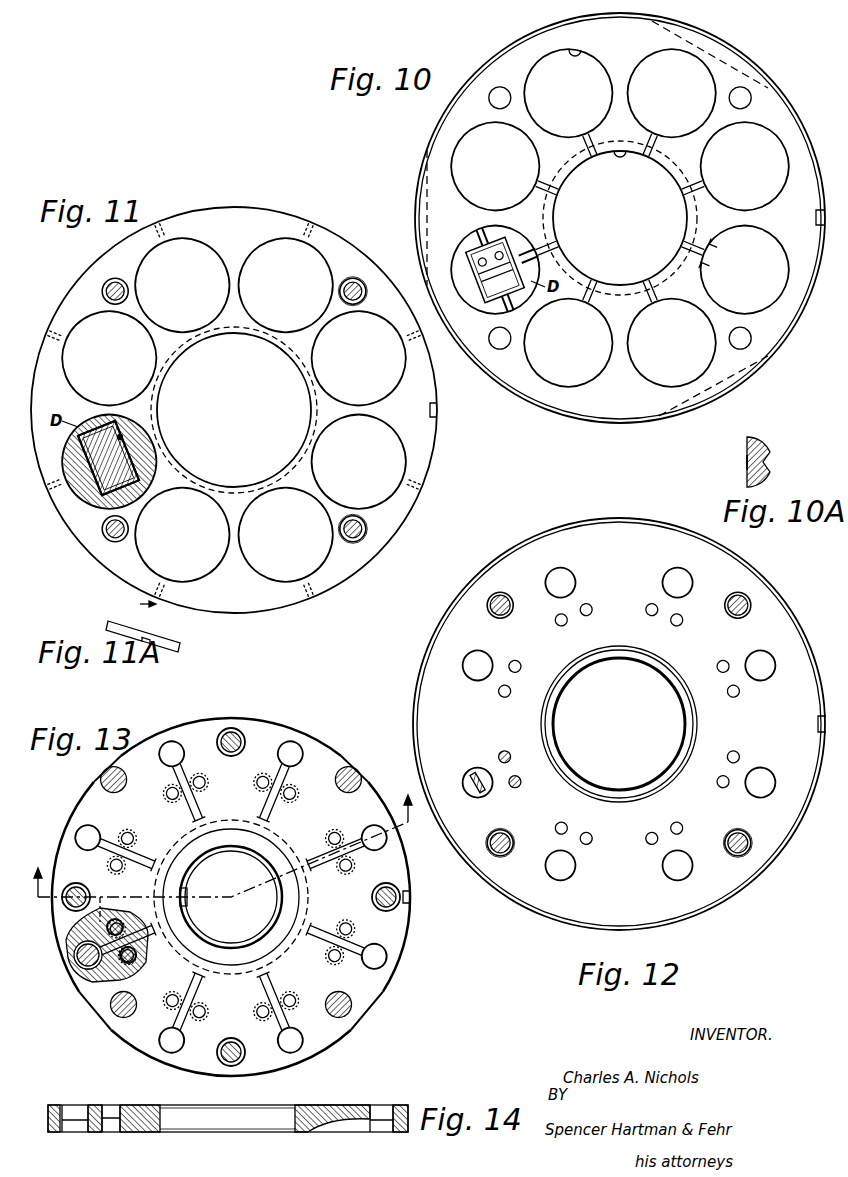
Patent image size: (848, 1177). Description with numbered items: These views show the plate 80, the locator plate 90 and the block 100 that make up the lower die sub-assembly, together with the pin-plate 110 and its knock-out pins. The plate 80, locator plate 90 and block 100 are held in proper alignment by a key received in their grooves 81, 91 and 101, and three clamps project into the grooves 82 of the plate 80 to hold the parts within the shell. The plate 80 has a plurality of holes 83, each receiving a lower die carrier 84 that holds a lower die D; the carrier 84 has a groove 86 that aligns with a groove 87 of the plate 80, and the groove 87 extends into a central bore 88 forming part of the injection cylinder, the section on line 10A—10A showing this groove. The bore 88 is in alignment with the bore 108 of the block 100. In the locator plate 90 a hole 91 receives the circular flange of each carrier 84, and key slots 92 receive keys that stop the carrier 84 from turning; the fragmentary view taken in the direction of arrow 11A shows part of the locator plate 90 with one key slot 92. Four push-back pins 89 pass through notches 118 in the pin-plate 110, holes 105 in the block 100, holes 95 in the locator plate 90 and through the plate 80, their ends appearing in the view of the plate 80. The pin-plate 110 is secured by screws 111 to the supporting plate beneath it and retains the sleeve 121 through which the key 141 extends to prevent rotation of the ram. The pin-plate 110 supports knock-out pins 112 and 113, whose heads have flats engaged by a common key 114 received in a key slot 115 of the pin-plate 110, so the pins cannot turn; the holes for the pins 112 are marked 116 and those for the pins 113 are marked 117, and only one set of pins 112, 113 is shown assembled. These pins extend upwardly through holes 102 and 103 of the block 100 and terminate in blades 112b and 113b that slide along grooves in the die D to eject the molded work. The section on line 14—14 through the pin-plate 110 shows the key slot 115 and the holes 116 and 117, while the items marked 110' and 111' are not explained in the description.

In FIG. 10, the plate 80 is at (560, 416).
In FIG. 10A, the plate 80 is at (768, 455).
In FIG. 10, the groove 81 is at (815, 219).
In FIG. 10, the grooves 82 is at (426, 208).
In FIG. 10, the holes 83 is at (582, 56).
In FIG. 10, the lower die carrier 84 is at (468, 256).
In FIG. 11, the lower die carrier 84 is at (135, 461).
In FIG. 10, the groove 86 is at (527, 251).
In FIG. 10, the groove 87 is at (556, 247).
In FIG. 10A, the groove 87 is at (745, 462).
In FIG. 10, the central bore 88 is at (619, 149).
In FIG. 10, the push-back pins 89 is at (504, 92).
In FIG. 11, the push-back pins 89 is at (121, 280).
In FIG. 12, the push-back pins 89 is at (505, 592).
In FIG. 13, the push-back pins 89 is at (125, 788).
In FIG. 11, the locator plate 90 is at (241, 206).
In FIG. 11A, the locator plate 90 is at (181, 646).
In FIG. 11, the groove 91 is at (438, 411).
In FIG. 11, the key slots 92 is at (165, 596).
In FIG. 11A, the key slots 92 is at (147, 646).
In FIG. 11, the holes 95 is at (352, 286).
In FIG. 12, the block 100 is at (721, 898).
In FIG. 12, the groove 101 is at (818, 724).
In FIG. 12, the holes 102 is at (469, 780).
In FIG. 12, the holes 103 is at (503, 754).
In FIG. 12, the holes 105 is at (500, 857).
In FIG. 12, the bore 108 is at (587, 781).
In FIG. 13, the pin-plate 110 is at (231, 907).
In FIG. 14, the pin-plate 110 is at (228, 1105).
In FIG. 13, the notch 110' is at (428, 898).
In FIG. 13, the screws 111 is at (231, 897).
In FIG. 14, the screw hole 111' is at (61, 1105).
In FIG. 13, the knock-out pins 112 is at (74, 957).
In FIG. 11, the blades 112b is at (92, 461).
In FIG. 12, the blades 112b is at (476, 790).
In FIG. 13, the knock-out pins 113 is at (142, 897).
In FIG. 11, the blades 113b is at (122, 437).
In FIG. 12, the blades 113b is at (518, 779).
In FIG. 13, the common key 114 is at (150, 954).
In FIG. 13, the key slot 115 is at (191, 922).
In FIG. 14, the key slot 115 is at (328, 1130).
In FIG. 13, the holes 116 is at (160, 1040).
In FIG. 14, the holes 116 is at (385, 1133).
In FIG. 13, the holes 117 is at (175, 997).
In FIG. 14, the holes 117 is at (110, 1133).
In FIG. 13, the notches 118 is at (90, 1008).
In FIG. 13, the sleeve 121 is at (192, 866).
In FIG. 13, the key 141 is at (188, 897).
In FIG. 13, the section line 14— 14 is at (221, 838).
In FIG. 10, the section line 10A— 10A is at (708, 238).
In FIG. 11, the arrow 11A is at (136, 604).